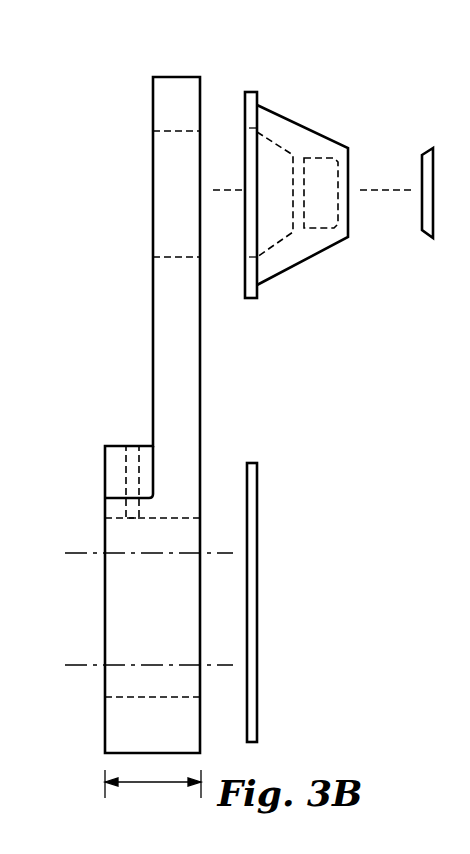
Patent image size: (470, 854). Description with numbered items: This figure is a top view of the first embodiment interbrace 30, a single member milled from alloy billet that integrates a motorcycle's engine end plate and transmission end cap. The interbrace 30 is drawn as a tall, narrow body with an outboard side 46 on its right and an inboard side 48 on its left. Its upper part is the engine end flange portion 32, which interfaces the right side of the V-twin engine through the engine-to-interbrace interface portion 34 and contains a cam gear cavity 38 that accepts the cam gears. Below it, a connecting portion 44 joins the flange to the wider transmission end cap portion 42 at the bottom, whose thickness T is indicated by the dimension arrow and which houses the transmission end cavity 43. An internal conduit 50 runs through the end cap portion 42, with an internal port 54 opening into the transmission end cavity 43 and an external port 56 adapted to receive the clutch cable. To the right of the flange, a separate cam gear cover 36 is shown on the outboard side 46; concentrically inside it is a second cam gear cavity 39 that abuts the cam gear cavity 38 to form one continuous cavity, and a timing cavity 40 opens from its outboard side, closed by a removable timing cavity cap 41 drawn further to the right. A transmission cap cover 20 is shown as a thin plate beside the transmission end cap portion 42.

The transmission cap cover 20 is at (257, 560).
The interbrace 30 is at (93, 66).
The engine end flange portion 32 is at (177, 90).
The engine-to-interbrace interface portion 34 is at (153, 93).
The cam gear cover 36 is at (298, 245).
The cam gear cavity 38 is at (163, 170).
The second cam gear cavity 39 is at (271, 155).
The timing cavity 40 is at (321, 165).
The timing cavity cap 41 is at (422, 235).
The transmission end cap portion 42 is at (110, 516).
The transmission end cavity 43 is at (125, 598).
The connecting portion 44 is at (158, 353).
The outboard side 46 is at (200, 375).
The inboard side 48 is at (153, 415).
The internal conduit 50 is at (105, 480).
The internal port 54 is at (128, 520).
The external port 56 is at (130, 447).